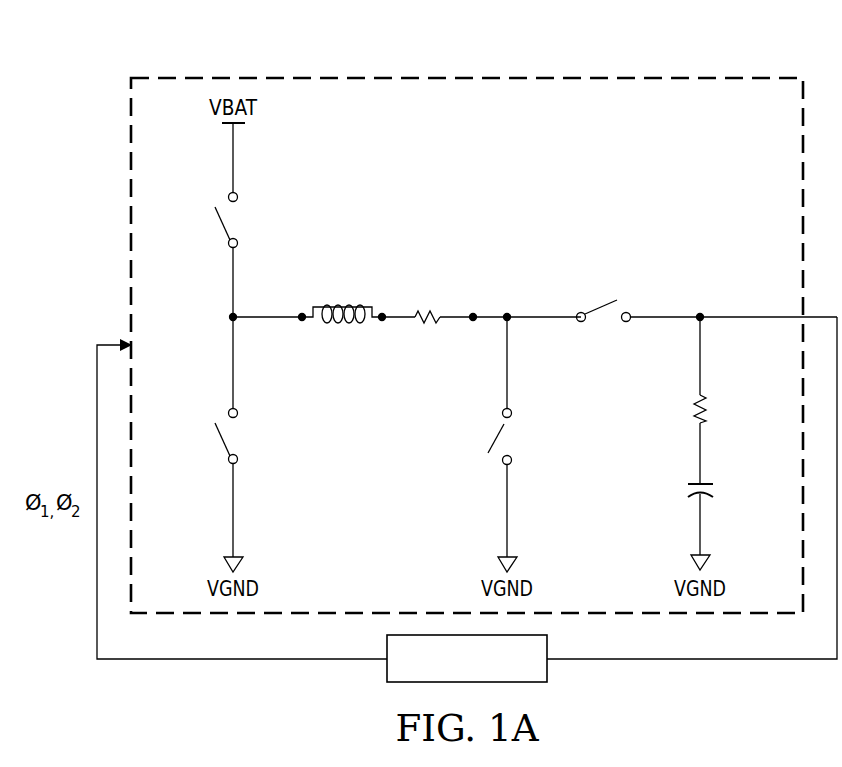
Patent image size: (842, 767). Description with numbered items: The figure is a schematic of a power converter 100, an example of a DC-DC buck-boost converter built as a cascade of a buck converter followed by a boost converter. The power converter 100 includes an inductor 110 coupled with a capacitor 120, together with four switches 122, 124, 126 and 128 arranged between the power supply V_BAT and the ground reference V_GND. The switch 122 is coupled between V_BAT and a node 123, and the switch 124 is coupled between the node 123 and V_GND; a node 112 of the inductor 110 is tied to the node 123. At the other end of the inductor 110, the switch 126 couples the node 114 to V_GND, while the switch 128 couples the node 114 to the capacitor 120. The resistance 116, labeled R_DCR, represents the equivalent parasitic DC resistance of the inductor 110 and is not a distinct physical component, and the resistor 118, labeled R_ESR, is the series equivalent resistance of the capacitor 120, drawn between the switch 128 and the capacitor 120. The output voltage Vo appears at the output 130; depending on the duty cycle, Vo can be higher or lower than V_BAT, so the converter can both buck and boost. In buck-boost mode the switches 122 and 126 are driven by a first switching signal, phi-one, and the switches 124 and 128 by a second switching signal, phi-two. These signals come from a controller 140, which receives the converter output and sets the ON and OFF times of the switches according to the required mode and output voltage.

The power converter 100 is at (634, 73).
The inductor 110 is at (336, 325).
The node 112 is at (299, 308).
The node 114 is at (477, 306).
The equivalent parasitic DC resistance 116 is at (424, 326).
The series equivalent resistor 118 is at (707, 408).
The capacitor 120 is at (715, 493).
The switch 122 is at (221, 222).
The node 123 is at (228, 313).
The switch 124 is at (221, 440).
The switch 126 is at (497, 434).
The switch 128 is at (603, 305).
The output 130 is at (707, 328).
The controller 140 is at (547, 670).